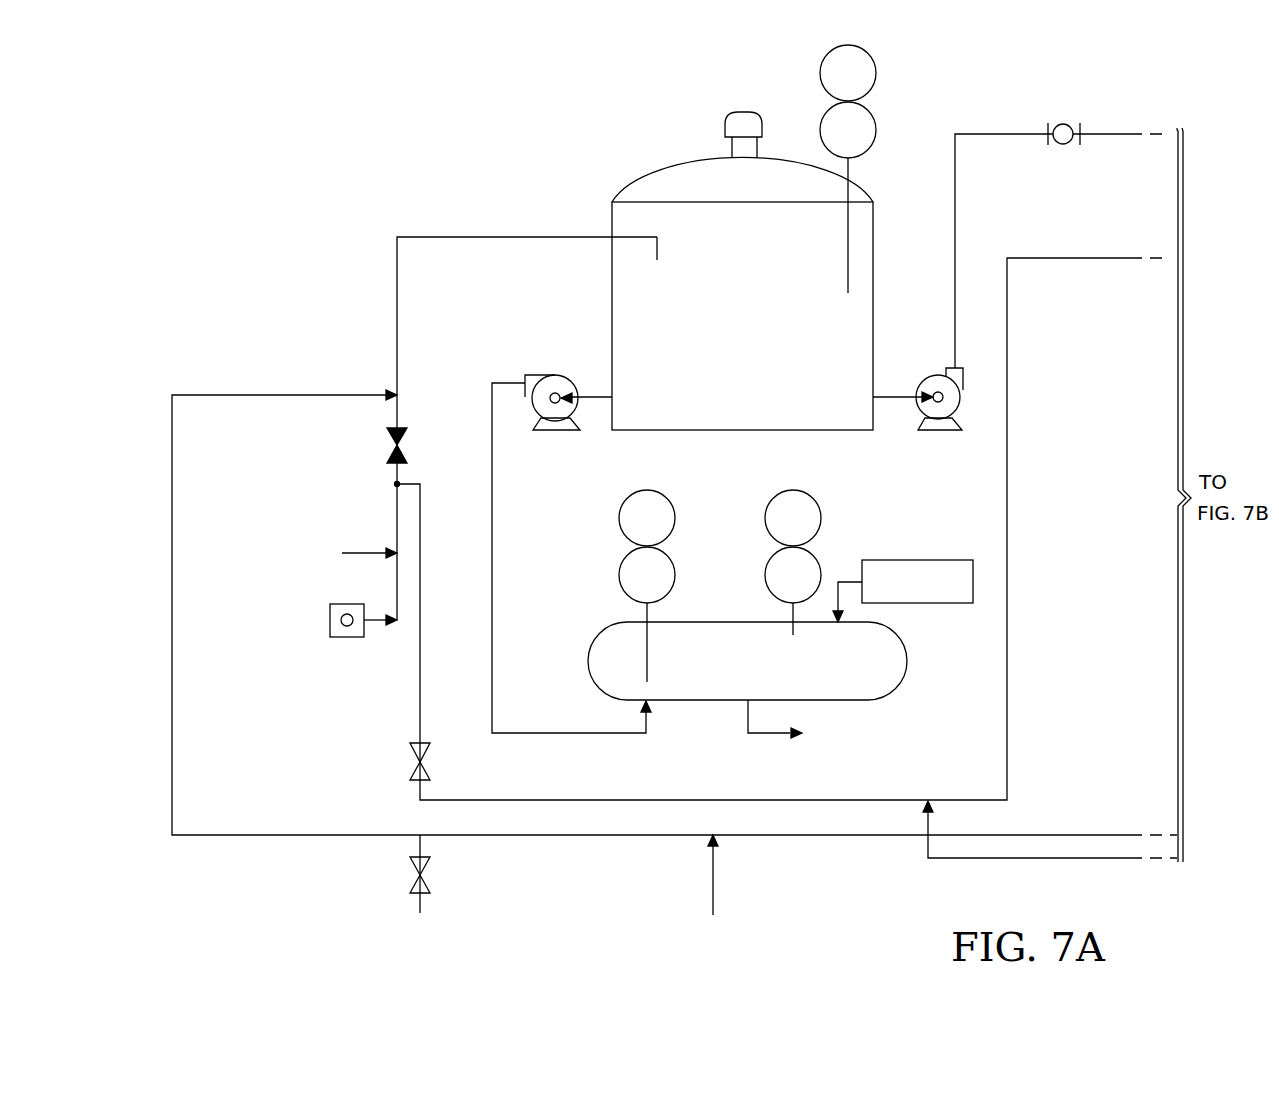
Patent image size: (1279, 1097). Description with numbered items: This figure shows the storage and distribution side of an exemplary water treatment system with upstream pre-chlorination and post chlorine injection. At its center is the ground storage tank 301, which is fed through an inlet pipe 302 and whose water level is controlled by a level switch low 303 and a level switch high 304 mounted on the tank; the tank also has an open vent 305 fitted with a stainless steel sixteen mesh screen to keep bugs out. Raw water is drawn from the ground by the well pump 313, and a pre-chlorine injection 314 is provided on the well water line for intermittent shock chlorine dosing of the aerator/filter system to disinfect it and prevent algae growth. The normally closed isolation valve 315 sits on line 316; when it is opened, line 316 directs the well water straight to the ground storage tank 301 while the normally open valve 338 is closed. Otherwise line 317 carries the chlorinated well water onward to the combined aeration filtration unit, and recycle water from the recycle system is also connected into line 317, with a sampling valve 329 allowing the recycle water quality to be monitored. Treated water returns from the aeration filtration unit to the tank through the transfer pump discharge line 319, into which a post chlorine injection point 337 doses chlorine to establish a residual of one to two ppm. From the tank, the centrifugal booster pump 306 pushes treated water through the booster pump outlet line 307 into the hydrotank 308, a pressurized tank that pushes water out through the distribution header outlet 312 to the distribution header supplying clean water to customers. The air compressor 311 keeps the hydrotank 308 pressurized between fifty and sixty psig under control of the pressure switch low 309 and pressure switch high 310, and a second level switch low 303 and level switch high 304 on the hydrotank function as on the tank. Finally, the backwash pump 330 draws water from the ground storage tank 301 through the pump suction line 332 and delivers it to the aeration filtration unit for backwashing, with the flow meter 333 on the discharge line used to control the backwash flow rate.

The ground storage tank 301 is at (758, 348).
The inlet pipe 302 is at (660, 243).
The level switch low 303 is at (876, 130).
The level switch high 304 is at (876, 73).
The open vent 305 is at (725, 130).
The centrifugal booster pump 306 is at (546, 376).
The booster pump outlet line 307 is at (586, 745).
The hydrotank 308 is at (714, 702).
The pressure switch low 309 is at (765, 576).
The pressure switch high 310 is at (765, 518).
The air compressor 311 is at (920, 604).
The distribution header outlet 312 is at (768, 740).
The well pump 313 is at (350, 640).
The pre-chlorine injection 314 is at (362, 553).
The isolation valve 315 is at (405, 450).
The line 316 is at (572, 236).
The line 317 is at (652, 800).
The transfer pump discharge line 319 is at (877, 836).
The sampling valve 329 is at (410, 880).
The backwash pump 330 is at (940, 372).
The pump suction line 332 is at (889, 397).
The flow meter 333 is at (1062, 145).
The post chlorine injection point 337 is at (711, 878).
The normally open valve 338 is at (428, 768).